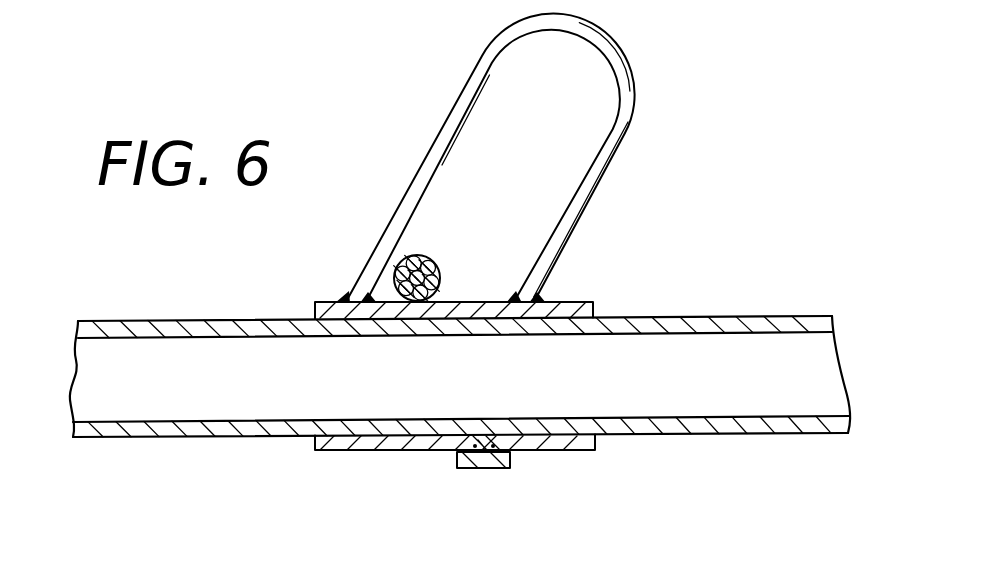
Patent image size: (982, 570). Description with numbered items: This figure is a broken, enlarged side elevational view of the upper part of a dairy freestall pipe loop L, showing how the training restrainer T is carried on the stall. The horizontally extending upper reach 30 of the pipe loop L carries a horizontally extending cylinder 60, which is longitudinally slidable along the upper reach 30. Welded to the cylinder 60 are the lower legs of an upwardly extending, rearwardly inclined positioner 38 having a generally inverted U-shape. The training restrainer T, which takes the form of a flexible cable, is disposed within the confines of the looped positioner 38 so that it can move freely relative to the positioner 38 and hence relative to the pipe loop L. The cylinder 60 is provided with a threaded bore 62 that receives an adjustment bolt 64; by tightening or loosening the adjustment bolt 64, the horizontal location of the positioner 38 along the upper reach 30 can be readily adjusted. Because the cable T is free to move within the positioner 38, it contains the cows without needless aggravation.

The upper reach 30 is at (818, 368).
The pipe loop L is at (90, 353).
The cylinder 60 is at (557, 304).
The threaded bore 62 is at (473, 467).
The adjustment bolt 64 is at (503, 472).
The positioner 38 is at (628, 128).
The training restrainer T is at (437, 271).